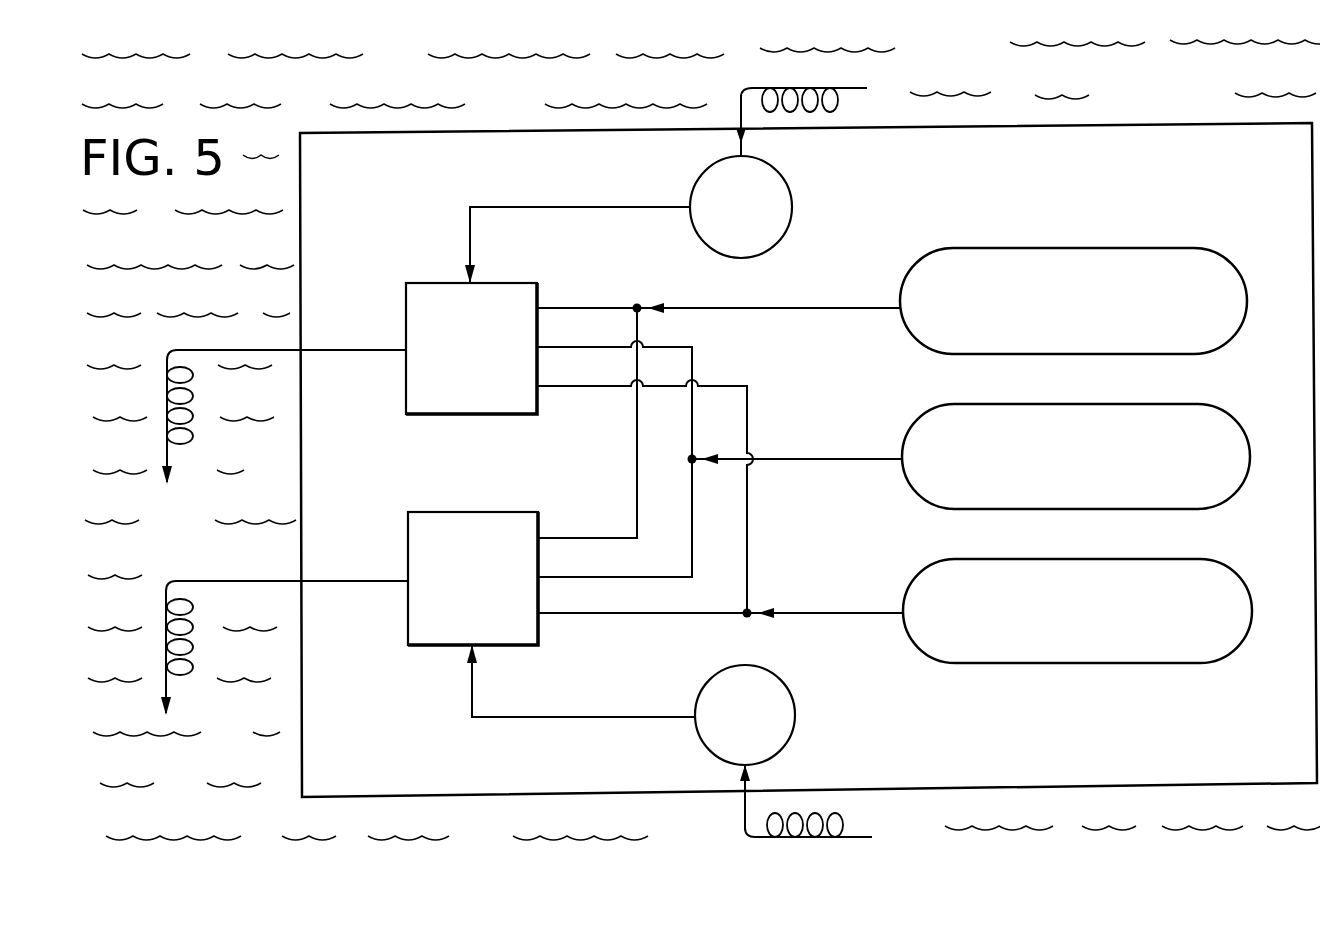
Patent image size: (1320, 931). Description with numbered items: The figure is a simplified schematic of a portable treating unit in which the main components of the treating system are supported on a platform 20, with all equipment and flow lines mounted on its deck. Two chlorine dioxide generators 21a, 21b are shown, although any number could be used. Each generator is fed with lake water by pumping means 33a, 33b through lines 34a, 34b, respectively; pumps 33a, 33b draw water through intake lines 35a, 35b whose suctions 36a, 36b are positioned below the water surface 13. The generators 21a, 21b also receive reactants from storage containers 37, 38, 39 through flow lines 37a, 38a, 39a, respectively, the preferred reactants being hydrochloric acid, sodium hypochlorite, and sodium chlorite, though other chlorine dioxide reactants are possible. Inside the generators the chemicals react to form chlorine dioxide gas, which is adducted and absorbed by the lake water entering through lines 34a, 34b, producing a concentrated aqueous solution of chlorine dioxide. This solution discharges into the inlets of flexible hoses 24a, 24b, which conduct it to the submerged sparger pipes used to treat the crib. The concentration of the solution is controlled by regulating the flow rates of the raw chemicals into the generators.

The water surface 13 is at (145, 265).
The platform 20 is at (528, 131).
The chlorine dioxide generator 21a is at (493, 357).
The chlorine dioxide generator 21b is at (494, 591).
The flexible hose 24a is at (162, 365).
The flexible hose 24b is at (172, 580).
The pumping means 33a is at (760, 220).
The pumping means 33b is at (758, 727).
The line 34a is at (467, 247).
The line 34b is at (470, 683).
The intake line 35a is at (747, 138).
The intake line 35b is at (750, 785).
The suction 36a is at (867, 84).
The suction 36b is at (848, 838).
The storage container 37 is at (1163, 248).
The flow line 37a is at (835, 304).
The storage container 38 is at (1187, 404).
The flow line 38a is at (830, 458).
The storage container 39 is at (1190, 559).
The flow line 39a is at (840, 613).